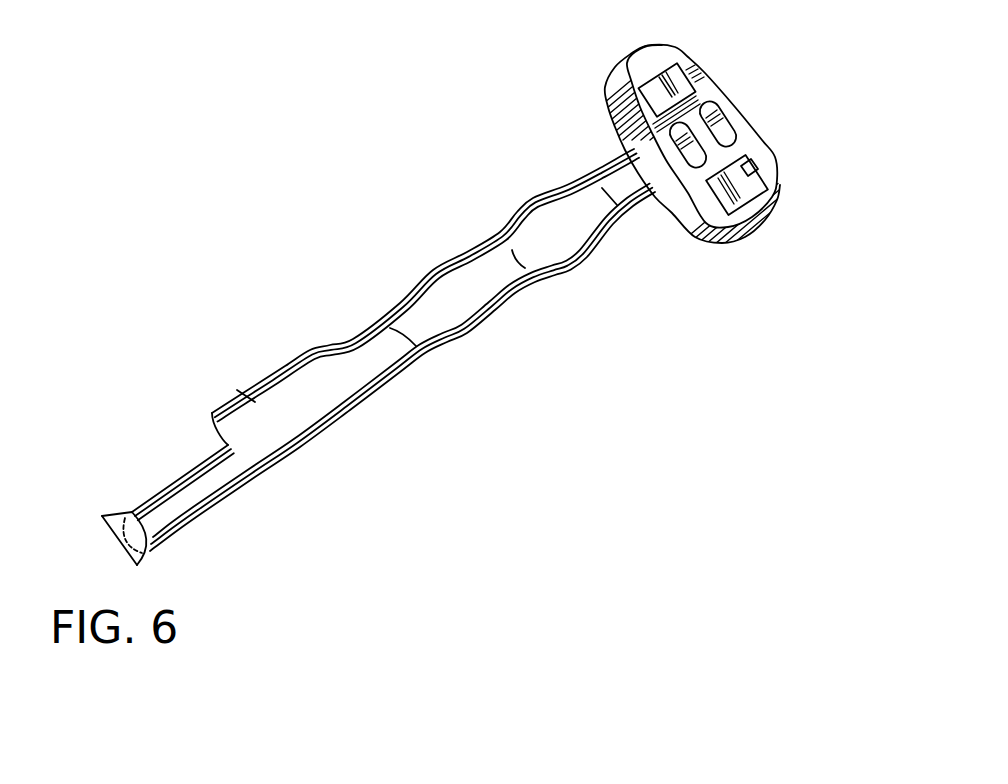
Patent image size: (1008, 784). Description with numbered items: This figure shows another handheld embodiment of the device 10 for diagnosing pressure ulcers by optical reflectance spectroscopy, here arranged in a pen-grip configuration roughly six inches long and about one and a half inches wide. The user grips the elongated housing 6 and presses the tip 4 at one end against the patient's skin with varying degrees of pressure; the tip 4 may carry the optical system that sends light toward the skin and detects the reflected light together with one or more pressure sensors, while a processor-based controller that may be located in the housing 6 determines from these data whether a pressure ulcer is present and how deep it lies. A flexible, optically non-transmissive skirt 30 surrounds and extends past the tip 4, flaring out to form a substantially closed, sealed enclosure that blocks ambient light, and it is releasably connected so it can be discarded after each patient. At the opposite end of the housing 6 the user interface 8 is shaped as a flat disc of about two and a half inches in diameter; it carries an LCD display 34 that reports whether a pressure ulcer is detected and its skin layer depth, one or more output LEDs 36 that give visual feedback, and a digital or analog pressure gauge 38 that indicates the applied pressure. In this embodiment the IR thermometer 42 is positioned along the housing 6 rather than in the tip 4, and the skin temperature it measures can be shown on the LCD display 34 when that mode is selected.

The tip 4 is at (122, 547).
The housing 6 is at (316, 437).
The user interface 8 is at (663, 53).
The handheld device 10 is at (336, 265).
The skirt 30 is at (140, 562).
The LCD display 34 is at (689, 85).
The output LEDs 36 is at (692, 130).
The pressure gauge 38 is at (753, 173).
The IR thermometer 42 is at (240, 393).